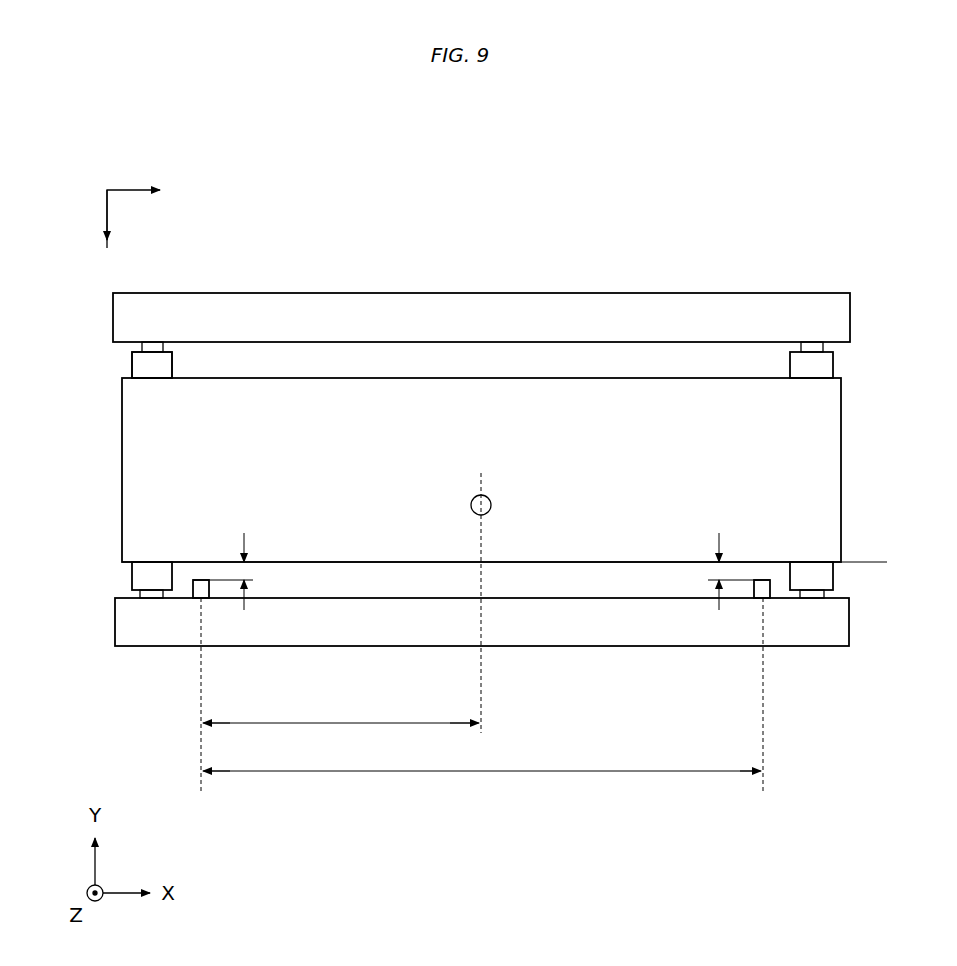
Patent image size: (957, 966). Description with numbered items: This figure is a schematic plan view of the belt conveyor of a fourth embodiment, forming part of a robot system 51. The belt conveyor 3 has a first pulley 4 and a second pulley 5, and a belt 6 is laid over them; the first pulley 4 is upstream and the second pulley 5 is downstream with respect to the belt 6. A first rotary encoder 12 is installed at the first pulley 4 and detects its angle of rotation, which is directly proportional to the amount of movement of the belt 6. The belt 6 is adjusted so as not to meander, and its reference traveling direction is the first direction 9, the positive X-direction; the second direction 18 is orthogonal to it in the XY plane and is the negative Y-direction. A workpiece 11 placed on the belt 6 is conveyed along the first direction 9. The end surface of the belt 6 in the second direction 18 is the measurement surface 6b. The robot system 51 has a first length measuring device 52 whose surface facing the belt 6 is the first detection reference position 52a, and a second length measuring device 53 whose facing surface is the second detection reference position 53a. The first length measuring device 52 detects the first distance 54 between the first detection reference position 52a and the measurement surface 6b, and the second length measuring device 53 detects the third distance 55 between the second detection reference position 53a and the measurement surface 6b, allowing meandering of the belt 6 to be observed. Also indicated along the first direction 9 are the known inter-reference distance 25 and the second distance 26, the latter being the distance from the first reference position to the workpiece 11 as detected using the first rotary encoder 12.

The belt conveyor 3 is at (707, 292).
The first pulley 4 is at (134, 366).
The first rotary encoder 12 is at (152, 365).
The second pulley 5 is at (828, 362).
The belt 6 is at (654, 428).
The measurement surface 6b is at (356, 565).
The first direction 9 is at (135, 188).
The second direction 18 is at (107, 212).
The workpiece 11 is at (492, 505).
The robot system 51 is at (830, 164).
The first length measuring device 52 is at (196, 592).
The first detection reference position 52a is at (195, 580).
The second length measuring device 53 is at (772, 592).
The second detection reference position 53a is at (760, 580).
The first distance 54 is at (253, 580).
The third distance 55 is at (708, 580).
The inter-reference distance 25 is at (627, 771).
The second distance 26 is at (345, 723).